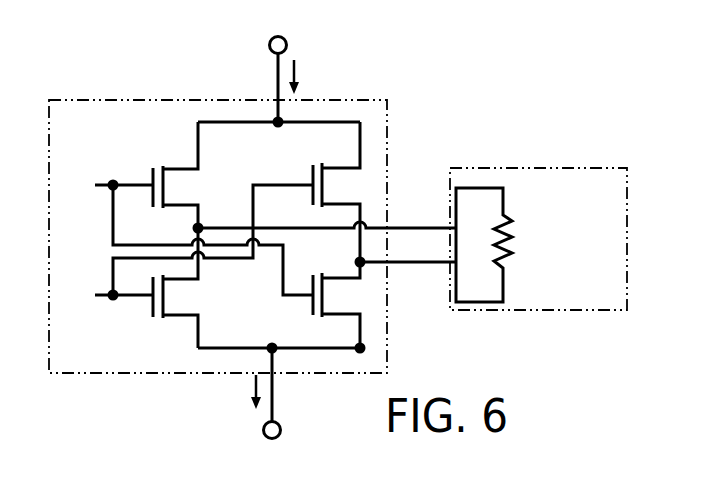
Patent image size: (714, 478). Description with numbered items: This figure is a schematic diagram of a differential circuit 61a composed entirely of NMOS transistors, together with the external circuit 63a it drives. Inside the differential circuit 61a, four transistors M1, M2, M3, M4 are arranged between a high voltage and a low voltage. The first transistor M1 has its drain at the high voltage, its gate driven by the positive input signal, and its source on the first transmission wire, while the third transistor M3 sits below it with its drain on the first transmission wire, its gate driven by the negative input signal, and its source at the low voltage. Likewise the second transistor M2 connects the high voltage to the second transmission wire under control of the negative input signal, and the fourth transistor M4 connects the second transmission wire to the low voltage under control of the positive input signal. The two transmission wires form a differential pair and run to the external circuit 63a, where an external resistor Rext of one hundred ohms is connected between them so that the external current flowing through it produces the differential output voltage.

The driver circuit 61a is at (63, 120).
The external circuit 63a is at (467, 180).
The first transistor M1 is at (176, 175).
The second transistor M2 is at (336, 192).
The third transistor M3 is at (176, 288).
The fourth transistor M4 is at (336, 305).
The external resistor Rext is at (531, 245).